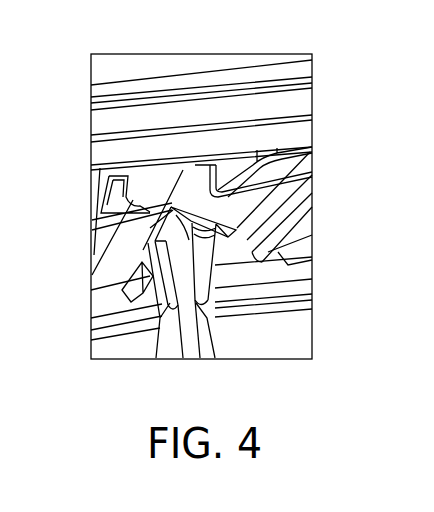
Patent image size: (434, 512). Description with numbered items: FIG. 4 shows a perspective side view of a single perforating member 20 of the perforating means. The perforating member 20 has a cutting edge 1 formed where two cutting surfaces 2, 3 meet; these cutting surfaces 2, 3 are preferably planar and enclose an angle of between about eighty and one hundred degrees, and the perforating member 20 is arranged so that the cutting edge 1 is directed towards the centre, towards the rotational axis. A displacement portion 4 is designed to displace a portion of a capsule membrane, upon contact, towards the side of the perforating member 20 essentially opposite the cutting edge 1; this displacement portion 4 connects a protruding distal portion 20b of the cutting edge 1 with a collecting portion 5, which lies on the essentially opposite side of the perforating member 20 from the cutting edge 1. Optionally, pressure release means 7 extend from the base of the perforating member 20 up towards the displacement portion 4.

The cutting edge 1 is at (214, 270).
The cutting surface 2 is at (200, 332).
The cutting surface 3 is at (180, 330).
The displacement portion 4 is at (165, 330).
The collecting portion 5 is at (192, 214).
The pressure release means 7 is at (152, 246).
The perforating member 20 is at (212, 297).
The protruding distal portion 20b is at (200, 340).